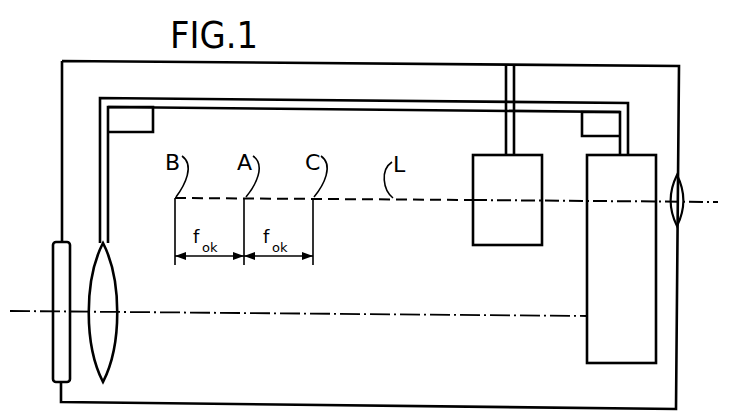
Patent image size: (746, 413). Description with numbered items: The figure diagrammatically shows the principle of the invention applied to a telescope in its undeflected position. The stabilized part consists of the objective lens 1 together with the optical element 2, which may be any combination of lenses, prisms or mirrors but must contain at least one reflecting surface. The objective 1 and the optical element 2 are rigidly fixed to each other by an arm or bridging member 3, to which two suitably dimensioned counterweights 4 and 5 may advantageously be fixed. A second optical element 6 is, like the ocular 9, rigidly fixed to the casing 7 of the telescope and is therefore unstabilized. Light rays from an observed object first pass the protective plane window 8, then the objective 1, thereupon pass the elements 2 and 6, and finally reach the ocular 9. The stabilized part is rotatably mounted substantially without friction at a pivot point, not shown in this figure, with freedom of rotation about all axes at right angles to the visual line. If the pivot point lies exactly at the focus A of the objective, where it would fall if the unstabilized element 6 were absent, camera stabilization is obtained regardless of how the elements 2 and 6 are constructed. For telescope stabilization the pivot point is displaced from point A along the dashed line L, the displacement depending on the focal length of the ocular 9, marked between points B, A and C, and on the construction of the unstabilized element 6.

The objective lens 1 is at (118, 293).
The optical element 2 is at (587, 355).
The arm or bridging member 3 is at (472, 100).
The counterweight 4 is at (128, 113).
The counterweight 5 is at (605, 121).
The second optical element 6 is at (473, 229).
The casing 7 is at (548, 64).
The protective plane window 8 is at (53, 346).
The ocular 9 is at (684, 208).